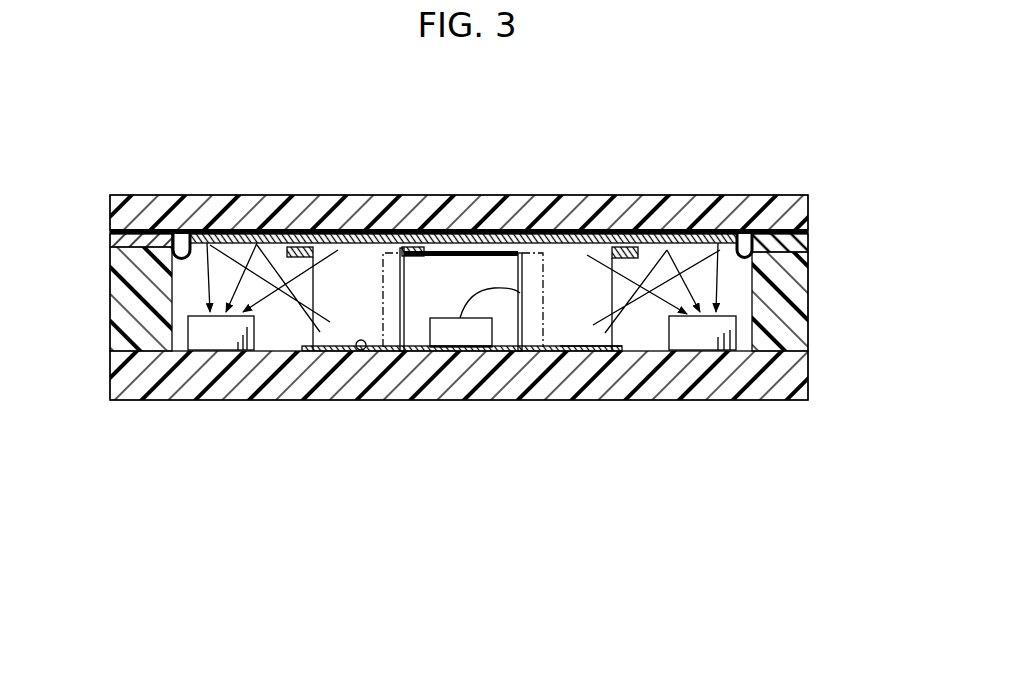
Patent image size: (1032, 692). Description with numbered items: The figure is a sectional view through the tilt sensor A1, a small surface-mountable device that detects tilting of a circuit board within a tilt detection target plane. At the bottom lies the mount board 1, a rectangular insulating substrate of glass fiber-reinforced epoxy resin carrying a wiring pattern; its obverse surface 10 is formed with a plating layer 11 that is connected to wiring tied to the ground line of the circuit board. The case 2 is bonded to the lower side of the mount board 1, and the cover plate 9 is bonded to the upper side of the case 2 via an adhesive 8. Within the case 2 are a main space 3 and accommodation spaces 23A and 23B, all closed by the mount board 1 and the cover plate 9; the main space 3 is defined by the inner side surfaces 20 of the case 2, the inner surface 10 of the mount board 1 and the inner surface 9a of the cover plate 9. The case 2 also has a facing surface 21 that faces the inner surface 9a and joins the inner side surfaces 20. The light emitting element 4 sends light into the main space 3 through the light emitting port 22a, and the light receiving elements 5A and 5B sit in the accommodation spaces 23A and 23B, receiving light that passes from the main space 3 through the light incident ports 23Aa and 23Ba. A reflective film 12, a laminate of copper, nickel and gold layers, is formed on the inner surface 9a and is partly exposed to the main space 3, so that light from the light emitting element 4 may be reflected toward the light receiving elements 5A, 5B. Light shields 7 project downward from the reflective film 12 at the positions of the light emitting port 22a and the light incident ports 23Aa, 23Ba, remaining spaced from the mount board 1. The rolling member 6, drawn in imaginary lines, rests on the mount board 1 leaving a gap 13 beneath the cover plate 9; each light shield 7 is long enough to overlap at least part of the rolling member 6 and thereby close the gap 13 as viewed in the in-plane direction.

The tilt sensor A1 is at (813, 192).
The mount board 1 is at (800, 380).
The case 2 is at (795, 283).
The main space 3 is at (493, 272).
The light emitting element 4 is at (480, 328).
The light receiving element 5A is at (208, 345).
The light receiving element 5B is at (703, 340).
The rolling member 6 is at (543, 323).
The light shield 7 is at (289, 248).
The adhesive 8 is at (112, 229).
The cover plate 9 is at (112, 196).
The inner surface of the cover plate 9a is at (422, 247).
The obverse surface of the mount board 10 is at (359, 350).
The plating layer 11 is at (605, 352).
The reflective film 12 is at (513, 247).
The gap 13 is at (478, 250).
The inner side surfaces of the case 20 is at (337, 351).
The facing surface 21 is at (160, 232).
The light emitting port 22a is at (440, 300).
The accommodation space 23A is at (183, 305).
The accommodation space 23B is at (747, 317).
The light incident port 23Aa is at (296, 268).
The light incident port 23Ba is at (623, 270).